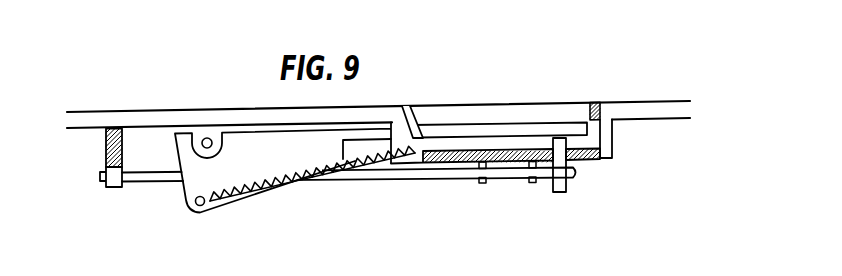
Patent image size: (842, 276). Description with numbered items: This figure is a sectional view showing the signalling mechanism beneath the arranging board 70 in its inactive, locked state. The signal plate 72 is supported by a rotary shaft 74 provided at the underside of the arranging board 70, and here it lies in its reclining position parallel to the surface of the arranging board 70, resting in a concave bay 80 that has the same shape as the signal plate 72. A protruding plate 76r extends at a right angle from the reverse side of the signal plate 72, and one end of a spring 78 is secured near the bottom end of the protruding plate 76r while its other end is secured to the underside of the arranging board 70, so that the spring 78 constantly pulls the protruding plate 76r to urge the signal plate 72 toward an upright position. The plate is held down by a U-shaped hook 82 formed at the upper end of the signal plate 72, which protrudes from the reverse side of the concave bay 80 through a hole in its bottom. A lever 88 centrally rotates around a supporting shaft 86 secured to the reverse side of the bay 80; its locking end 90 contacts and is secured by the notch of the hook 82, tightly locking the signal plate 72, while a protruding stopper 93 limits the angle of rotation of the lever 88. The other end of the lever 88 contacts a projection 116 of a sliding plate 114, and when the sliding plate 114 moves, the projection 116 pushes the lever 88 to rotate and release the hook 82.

The arranging board 70 is at (635, 101).
The signal plate 72 is at (438, 128).
The rotary shaft 74 is at (207, 137).
The protruding plate 76r is at (195, 185).
The spring 78 is at (377, 163).
The concave bay 80 is at (495, 143).
The U-shaped hook 82 is at (562, 193).
The supporting shaft 86 is at (480, 181).
The lever 88 is at (152, 167).
The locking end 90 is at (575, 171).
The protruding stopper 93 is at (530, 183).
The sliding plate 114 is at (106, 150).
The projection 116 is at (113, 188).